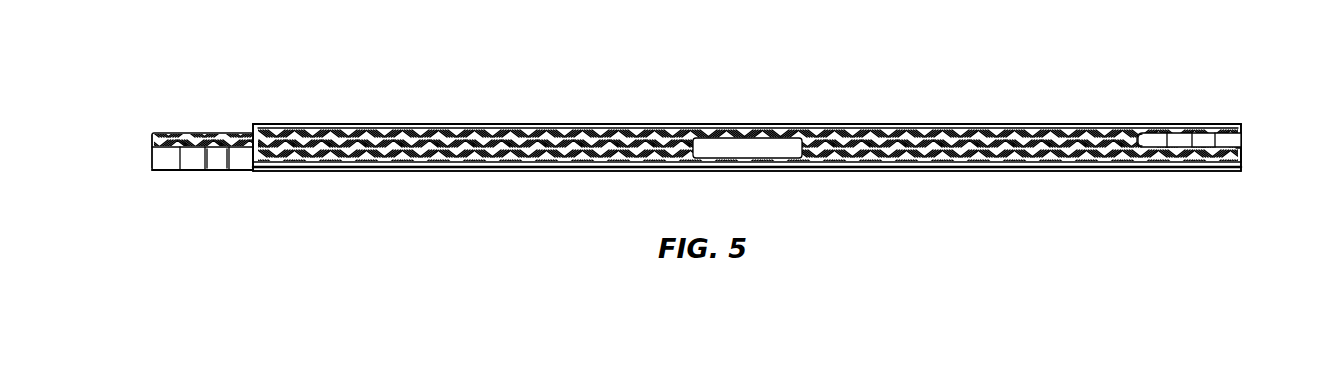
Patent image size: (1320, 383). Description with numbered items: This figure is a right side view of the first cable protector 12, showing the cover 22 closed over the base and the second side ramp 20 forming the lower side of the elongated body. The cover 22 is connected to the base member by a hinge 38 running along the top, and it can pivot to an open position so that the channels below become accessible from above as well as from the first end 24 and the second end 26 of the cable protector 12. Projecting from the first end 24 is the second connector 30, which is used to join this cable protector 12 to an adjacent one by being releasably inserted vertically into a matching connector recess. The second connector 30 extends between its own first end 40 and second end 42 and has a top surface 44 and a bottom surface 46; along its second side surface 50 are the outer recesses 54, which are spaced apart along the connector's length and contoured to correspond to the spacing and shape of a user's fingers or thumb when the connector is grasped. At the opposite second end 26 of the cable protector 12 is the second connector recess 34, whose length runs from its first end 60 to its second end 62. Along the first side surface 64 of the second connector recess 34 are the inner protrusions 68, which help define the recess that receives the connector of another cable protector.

The first cable protector 12 is at (962, 90).
The second side ramp 20 is at (587, 172).
The cover 22 is at (306, 125).
The first end 24 is at (265, 170).
The second end 26 is at (1220, 172).
The second connector 30 is at (165, 130).
The second connector recess 34 is at (1245, 136).
The hinge 38 is at (407, 124).
The first end 40 is at (248, 170).
The second end 42 is at (152, 155).
The top surface 44 is at (203, 135).
The bottom surface 46 is at (190, 170).
The second side surface 50 is at (167, 165).
The outer recesses 54 is at (240, 165).
The first end 60 is at (1243, 148).
The second end 62 is at (1142, 134).
The first side surface 64 is at (1198, 138).
The inner protrusions 68 is at (1178, 140).